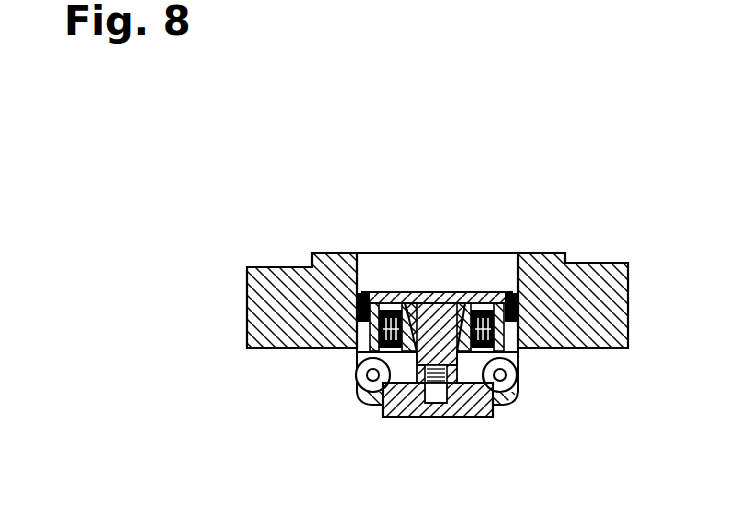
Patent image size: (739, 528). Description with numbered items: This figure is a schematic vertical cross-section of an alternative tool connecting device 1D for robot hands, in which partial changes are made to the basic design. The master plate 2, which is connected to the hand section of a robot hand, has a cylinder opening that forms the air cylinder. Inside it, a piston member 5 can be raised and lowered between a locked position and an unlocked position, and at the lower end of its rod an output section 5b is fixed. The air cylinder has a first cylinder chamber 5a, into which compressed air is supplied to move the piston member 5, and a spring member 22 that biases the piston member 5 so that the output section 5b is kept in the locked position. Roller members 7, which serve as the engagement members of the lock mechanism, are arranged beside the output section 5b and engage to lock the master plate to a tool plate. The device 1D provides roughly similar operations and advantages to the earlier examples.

The tool connecting device 1D is at (268, 176).
The master plate 2 is at (288, 247).
The piston member 5 is at (432, 300).
The first cylinder chamber 5a is at (388, 267).
The output section 5b is at (393, 417).
The spring member 22 is at (483, 310).
The roller members 7 is at (355, 386).